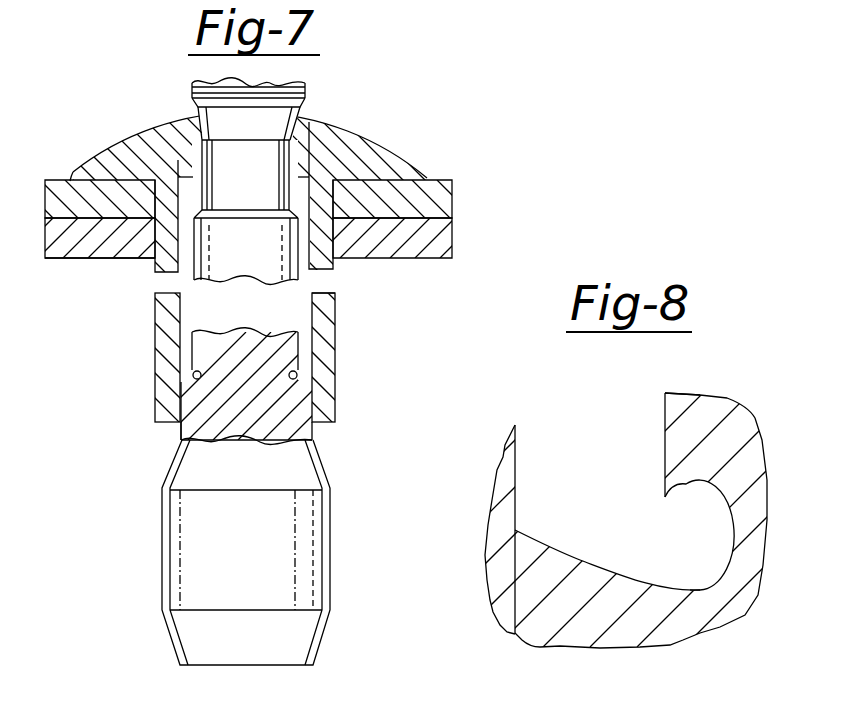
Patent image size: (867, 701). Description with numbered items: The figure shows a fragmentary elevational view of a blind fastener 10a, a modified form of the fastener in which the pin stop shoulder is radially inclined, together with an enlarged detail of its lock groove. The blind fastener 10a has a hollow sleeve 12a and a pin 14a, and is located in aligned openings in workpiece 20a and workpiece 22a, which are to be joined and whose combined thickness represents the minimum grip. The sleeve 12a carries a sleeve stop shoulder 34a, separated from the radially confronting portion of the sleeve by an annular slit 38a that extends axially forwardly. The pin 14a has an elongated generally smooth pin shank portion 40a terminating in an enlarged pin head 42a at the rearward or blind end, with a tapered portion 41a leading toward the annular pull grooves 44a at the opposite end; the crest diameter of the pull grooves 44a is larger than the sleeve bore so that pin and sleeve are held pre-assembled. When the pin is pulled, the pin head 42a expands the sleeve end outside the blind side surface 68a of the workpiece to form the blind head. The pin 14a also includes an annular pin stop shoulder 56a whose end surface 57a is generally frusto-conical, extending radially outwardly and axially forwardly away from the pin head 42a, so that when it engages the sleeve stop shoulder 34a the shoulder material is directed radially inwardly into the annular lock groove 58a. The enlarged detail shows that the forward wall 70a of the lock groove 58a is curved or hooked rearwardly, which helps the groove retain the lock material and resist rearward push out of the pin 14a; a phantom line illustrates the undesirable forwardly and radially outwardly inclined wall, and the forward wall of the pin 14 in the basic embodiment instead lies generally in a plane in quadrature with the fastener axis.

In FIG. 7, the blind fastener 10a is at (358, 303).
In FIG. 7, the hollow sleeve 12a is at (335, 365).
In FIG. 8, the hollow sleeve 12a is at (494, 448).
In FIG. 7, the pin 14a is at (186, 426).
In FIG. 8, the pin 14a is at (750, 363).
In FIG. 8, the pin 14 is at (667, 474).
In FIG. 7, the workpiece 20a is at (443, 242).
In FIG. 7, the workpiece 22a is at (433, 190).
In FIG. 7, the sleeve stop shoulder 34a is at (302, 155).
In FIG. 7, the annular slit 38a is at (170, 160).
In FIG. 7, the pin shank portion 40a is at (230, 215).
In FIG. 8, the pin shank portion 40a is at (670, 408).
In FIG. 7, the tapered portion 41a is at (250, 215).
In FIG. 7, the pin head 42a is at (330, 543).
In FIG. 7, the pull grooves 44a is at (308, 87).
In FIG. 7, the pin stop shoulder 56a is at (186, 430).
In FIG. 7, the end surface 57a is at (193, 375).
In FIG. 8, the end surface 57a is at (537, 543).
In FIG. 7, the annular lock groove 58a is at (293, 380).
In FIG. 8, the annular lock groove 58a is at (688, 543).
In FIG. 7, the blind side surface 68a is at (93, 258).
In FIG. 8, the forward wall 70a is at (680, 487).